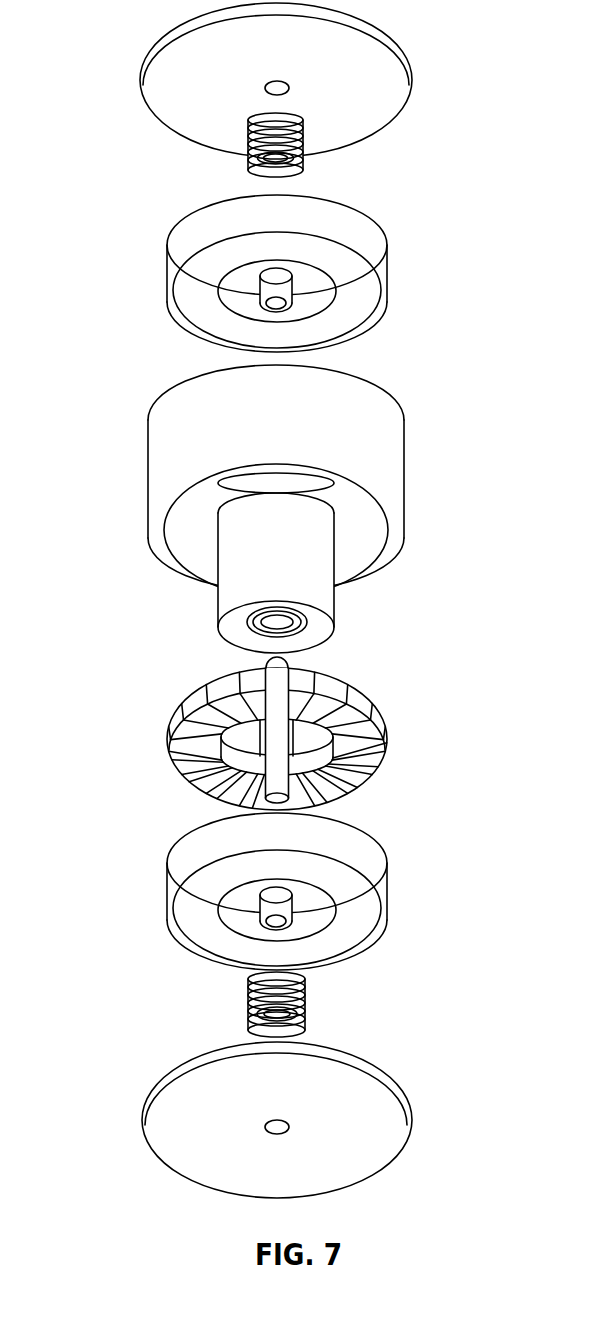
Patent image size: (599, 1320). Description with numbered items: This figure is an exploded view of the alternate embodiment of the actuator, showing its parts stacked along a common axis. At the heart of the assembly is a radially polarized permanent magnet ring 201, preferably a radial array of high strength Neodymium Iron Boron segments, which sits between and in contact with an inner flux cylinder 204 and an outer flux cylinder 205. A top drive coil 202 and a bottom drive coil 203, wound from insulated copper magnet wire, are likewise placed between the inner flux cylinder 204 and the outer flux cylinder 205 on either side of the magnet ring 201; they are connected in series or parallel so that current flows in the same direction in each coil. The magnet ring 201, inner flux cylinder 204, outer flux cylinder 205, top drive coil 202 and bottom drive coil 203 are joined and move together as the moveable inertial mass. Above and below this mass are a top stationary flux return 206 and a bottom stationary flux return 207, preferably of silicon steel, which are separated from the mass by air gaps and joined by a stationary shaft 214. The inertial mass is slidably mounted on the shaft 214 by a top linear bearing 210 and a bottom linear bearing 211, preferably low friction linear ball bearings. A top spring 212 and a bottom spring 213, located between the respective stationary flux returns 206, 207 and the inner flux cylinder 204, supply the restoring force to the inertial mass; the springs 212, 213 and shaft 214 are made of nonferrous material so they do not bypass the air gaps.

The radially polarized permanent magnet ring 201 is at (365, 700).
The top drive coil 202 is at (358, 265).
The bottom drive coil 203 is at (367, 898).
The inner flux cylinder 204 is at (238, 548).
The outer flux cylinder 205 is at (213, 423).
The top stationary flux return 206 is at (390, 85).
The bottom stationary flux return 207 is at (197, 1088).
The top linear bearing 210 is at (276, 290).
The bottom linear bearing 211 is at (272, 896).
The top spring 212 is at (305, 137).
The bottom spring 213 is at (248, 1010).
The stationary shaft 214 is at (275, 762).